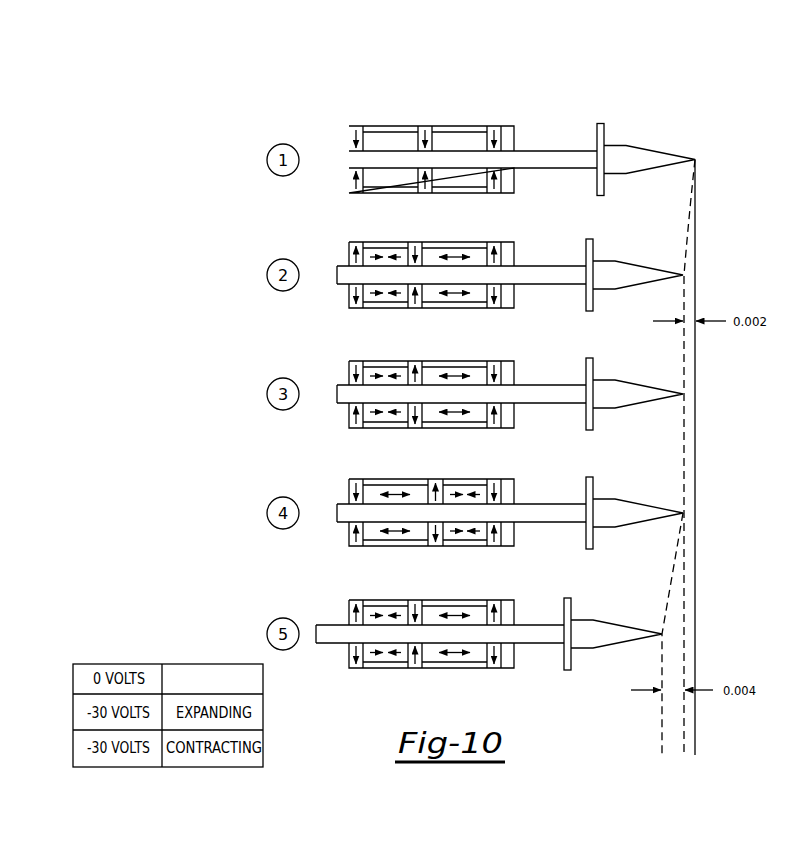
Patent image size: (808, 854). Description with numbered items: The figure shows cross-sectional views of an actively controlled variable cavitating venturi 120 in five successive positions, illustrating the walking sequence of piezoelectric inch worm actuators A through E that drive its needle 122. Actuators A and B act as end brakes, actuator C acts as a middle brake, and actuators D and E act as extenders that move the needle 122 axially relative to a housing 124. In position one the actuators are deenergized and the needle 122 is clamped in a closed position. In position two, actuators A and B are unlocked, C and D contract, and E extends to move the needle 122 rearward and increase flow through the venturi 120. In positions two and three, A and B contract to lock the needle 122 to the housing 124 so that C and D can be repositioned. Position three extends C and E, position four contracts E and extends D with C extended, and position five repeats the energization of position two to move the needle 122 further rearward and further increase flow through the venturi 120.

The actively controlled variable cavitating venturi 120 is at (523, 114).
The needle 122 is at (538, 151).
The housing 124 is at (380, 126).